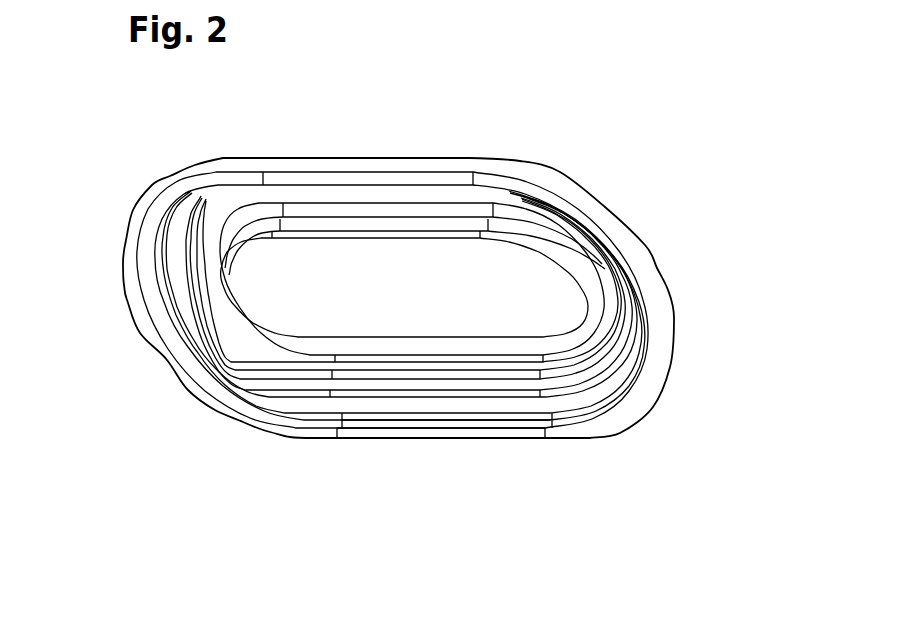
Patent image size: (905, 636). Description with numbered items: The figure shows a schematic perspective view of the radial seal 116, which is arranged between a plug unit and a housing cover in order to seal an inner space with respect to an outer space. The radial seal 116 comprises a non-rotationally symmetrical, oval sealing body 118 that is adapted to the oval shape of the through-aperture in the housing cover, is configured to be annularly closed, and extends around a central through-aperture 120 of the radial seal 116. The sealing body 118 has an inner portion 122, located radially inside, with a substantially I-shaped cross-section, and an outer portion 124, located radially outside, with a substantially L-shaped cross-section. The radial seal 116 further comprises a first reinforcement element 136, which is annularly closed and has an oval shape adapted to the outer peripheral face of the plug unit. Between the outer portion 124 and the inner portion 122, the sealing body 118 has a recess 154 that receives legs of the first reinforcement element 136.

The radial seal 116 is at (619, 182).
The sealing body 118 is at (603, 250).
The central through-aperture 120 is at (451, 300).
The inner portion 122 is at (490, 192).
The outer portion 124 is at (426, 165).
The first reinforcement element 136 is at (558, 385).
The recess 154 is at (643, 307).